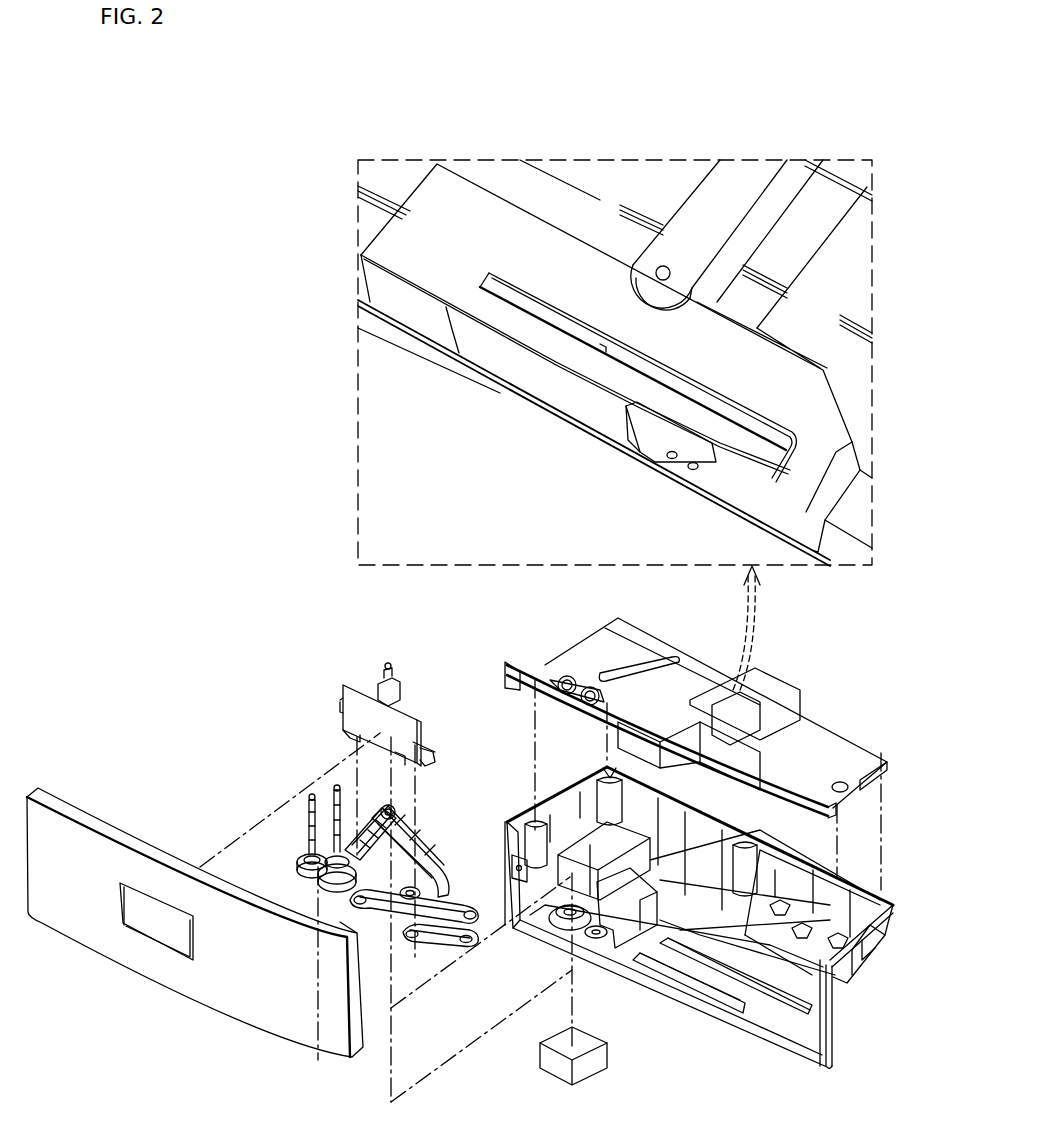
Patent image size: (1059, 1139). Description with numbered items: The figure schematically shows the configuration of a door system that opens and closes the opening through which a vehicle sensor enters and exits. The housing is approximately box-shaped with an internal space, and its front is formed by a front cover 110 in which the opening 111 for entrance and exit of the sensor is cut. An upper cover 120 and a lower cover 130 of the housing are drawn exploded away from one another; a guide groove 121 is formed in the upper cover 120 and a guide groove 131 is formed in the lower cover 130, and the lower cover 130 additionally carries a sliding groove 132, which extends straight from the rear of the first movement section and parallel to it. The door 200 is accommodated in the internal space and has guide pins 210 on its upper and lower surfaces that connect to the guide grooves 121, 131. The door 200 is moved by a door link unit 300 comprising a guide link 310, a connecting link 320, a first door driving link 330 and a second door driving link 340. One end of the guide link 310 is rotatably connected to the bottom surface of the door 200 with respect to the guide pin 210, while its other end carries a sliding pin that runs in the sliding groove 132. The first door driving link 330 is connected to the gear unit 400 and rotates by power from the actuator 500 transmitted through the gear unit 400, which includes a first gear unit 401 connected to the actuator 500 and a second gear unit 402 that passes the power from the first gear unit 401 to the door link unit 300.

The front cover 110 is at (83, 833).
The opening 111 is at (152, 918).
The upper cover 120 is at (515, 176).
The guide groove 121 is at (606, 352).
The lower cover 130 is at (865, 950).
The guide groove 131 is at (703, 1003).
The sliding groove 132 is at (770, 1012).
The door 200 is at (332, 688).
The guide pin 210 is at (388, 664).
The door link unit 300 is at (405, 883).
The guide link 310 is at (440, 948).
The connecting link 320 is at (452, 905).
The first door driving link 330 is at (370, 817).
The second door driving link 340 is at (453, 832).
The gear unit 400 is at (275, 820).
The first gear unit 401 is at (307, 812).
The second gear unit 402 is at (328, 798).
The actuator 500 is at (538, 1078).